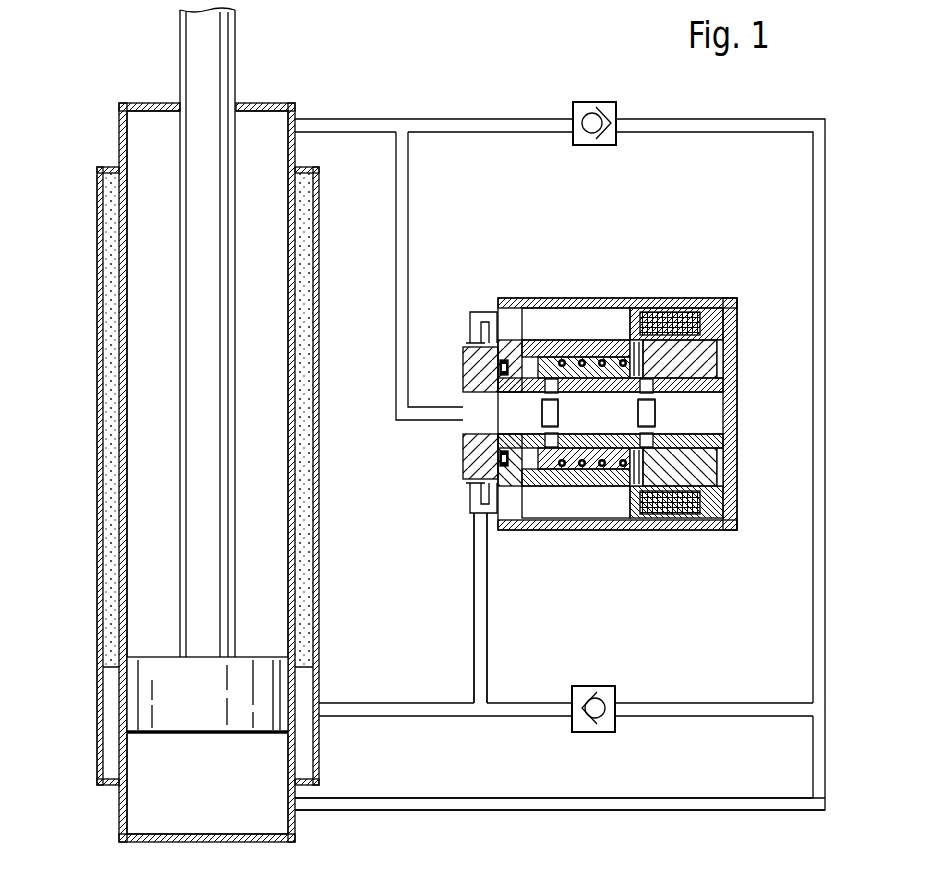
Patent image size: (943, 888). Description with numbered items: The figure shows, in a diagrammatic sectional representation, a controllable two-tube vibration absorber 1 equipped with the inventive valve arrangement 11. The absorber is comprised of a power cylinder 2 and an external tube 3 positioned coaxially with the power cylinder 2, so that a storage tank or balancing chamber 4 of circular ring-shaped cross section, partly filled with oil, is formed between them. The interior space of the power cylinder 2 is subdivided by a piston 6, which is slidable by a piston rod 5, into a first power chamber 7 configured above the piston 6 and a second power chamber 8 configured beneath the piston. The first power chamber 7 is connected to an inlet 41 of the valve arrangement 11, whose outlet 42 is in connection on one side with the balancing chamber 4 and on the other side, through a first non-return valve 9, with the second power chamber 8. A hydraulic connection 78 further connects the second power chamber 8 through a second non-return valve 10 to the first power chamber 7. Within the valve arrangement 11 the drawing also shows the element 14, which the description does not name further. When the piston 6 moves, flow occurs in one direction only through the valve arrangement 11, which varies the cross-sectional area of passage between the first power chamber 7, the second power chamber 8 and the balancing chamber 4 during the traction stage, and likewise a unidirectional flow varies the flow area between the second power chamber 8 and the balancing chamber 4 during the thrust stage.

The two-tube vibration absorber 1 is at (95, 399).
The power cylinder 2 is at (118, 131).
The external tube 3 is at (100, 270).
The balancing chamber 4 is at (108, 330).
The piston rod 5 is at (228, 53).
The piston 6 is at (148, 714).
The first power chamber 7 is at (253, 459).
The second power chamber 8 is at (199, 801).
The first non-return valve 9 is at (592, 685).
The second non-return valve 10 is at (583, 145).
The valve arrangement 11 is at (597, 295).
The solenoid coil 14 is at (712, 295).
The inlet 41 is at (463, 407).
The outlet 42 is at (494, 512).
The hydraulic connection 78 is at (536, 812).